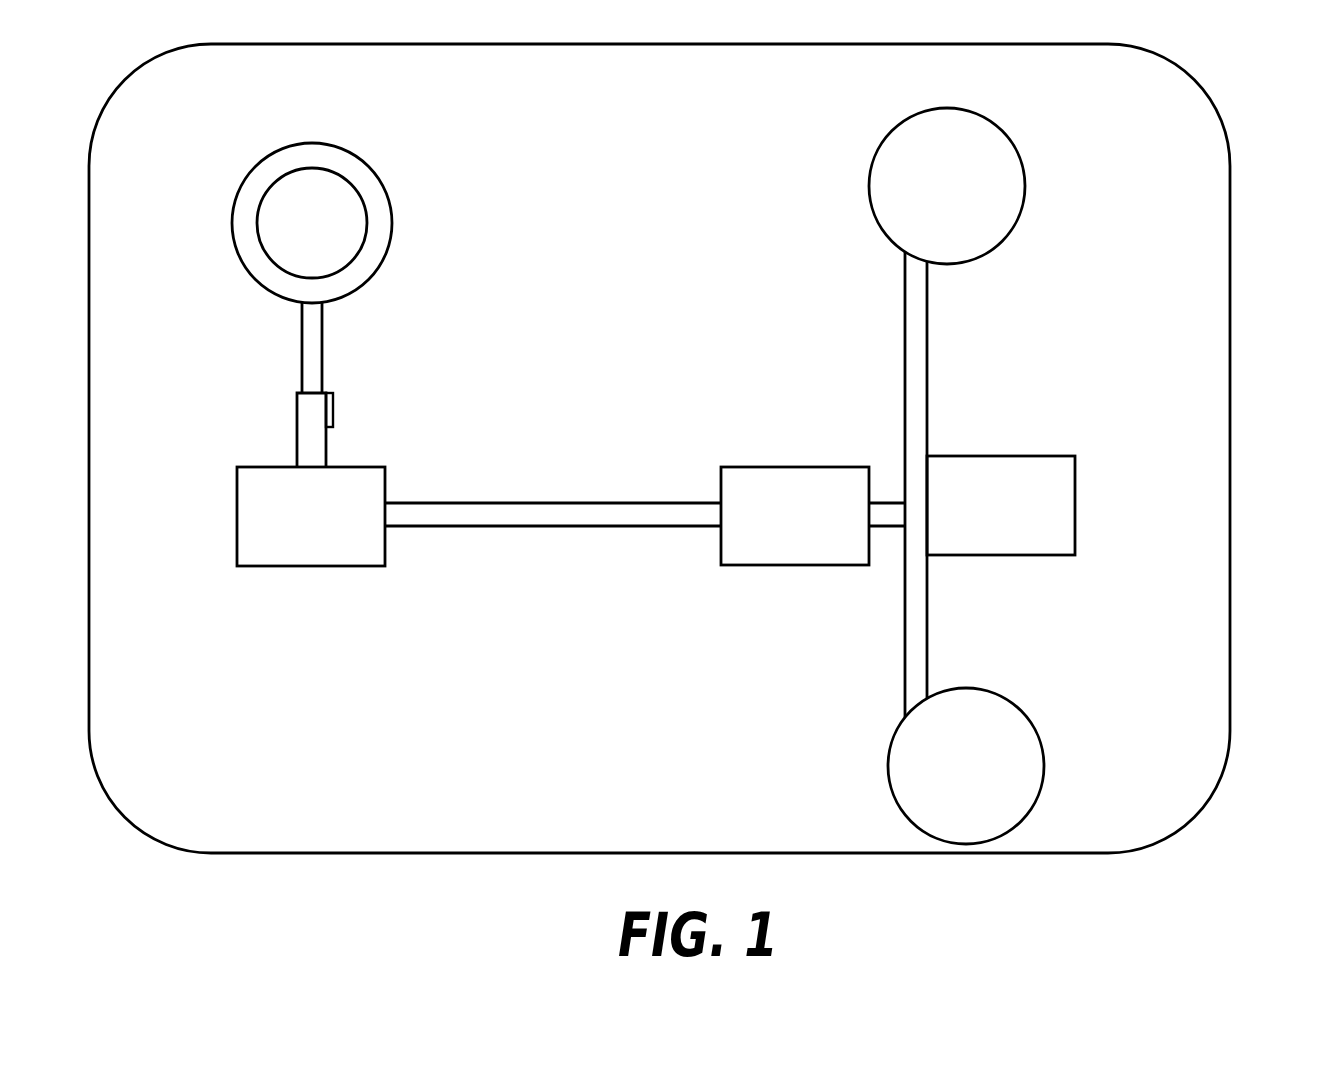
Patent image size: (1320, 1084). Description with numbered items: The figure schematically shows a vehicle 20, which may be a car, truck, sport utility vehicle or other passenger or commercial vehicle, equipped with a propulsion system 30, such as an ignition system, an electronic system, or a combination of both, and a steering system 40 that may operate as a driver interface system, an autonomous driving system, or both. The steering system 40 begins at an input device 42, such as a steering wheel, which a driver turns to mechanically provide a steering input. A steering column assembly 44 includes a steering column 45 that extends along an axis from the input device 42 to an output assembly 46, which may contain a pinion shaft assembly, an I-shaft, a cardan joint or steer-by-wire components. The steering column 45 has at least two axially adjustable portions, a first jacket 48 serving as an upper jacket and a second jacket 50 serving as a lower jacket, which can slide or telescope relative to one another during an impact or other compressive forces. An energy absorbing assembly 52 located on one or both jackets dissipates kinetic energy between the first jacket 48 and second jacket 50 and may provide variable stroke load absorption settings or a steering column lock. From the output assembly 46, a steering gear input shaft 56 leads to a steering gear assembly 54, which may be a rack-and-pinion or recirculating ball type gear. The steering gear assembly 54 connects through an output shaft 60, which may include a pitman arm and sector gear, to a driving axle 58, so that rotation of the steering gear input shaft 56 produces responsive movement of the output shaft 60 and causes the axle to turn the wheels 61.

The vehicle 20 is at (1231, 100).
The propulsion system 30 is at (1014, 522).
The steering system 40 is at (1077, 187).
The input device 42 is at (247, 182).
The steering column assembly 44 is at (262, 352).
The steering column 45 is at (296, 410).
The output assembly 46 is at (323, 532).
The first jacket 48 is at (323, 343).
The second jacket 50 is at (328, 453).
The energy absorbing assembly 52 is at (335, 410).
The steering gear assembly 54 is at (805, 533).
The steering gear input shaft 56 is at (696, 512).
The driving axle 58 is at (921, 603).
The output shaft 60 is at (893, 512).
The wheels 61 is at (1002, 242).